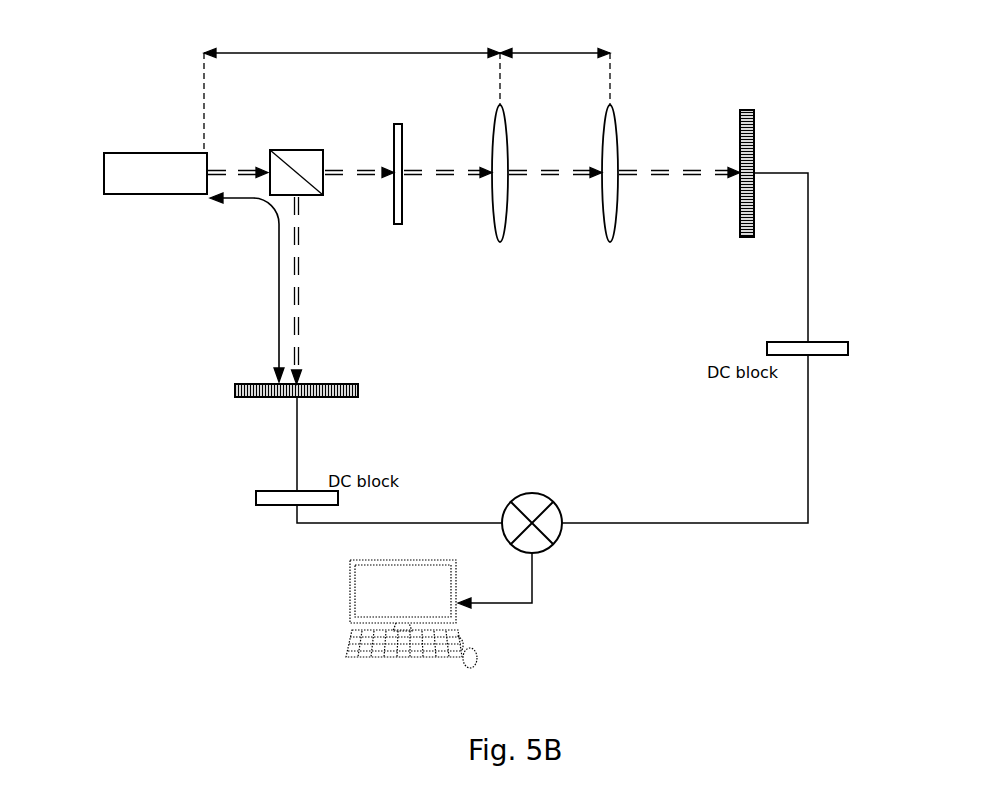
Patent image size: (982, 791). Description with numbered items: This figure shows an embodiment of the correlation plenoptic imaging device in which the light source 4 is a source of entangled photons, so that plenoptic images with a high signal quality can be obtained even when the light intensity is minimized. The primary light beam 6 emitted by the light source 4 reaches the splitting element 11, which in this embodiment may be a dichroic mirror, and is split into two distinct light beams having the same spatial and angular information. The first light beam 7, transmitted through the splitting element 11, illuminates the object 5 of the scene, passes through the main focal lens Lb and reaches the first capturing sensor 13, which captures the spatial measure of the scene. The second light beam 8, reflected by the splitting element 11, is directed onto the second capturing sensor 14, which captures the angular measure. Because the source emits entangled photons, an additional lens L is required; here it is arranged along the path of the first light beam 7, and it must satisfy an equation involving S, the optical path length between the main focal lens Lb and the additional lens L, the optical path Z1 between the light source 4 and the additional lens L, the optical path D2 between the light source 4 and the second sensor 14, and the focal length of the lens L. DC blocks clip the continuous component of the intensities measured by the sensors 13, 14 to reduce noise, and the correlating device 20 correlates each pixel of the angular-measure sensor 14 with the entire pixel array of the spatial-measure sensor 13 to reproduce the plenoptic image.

The light source 4 is at (140, 173).
The object 5 is at (399, 156).
The primary light beam 6 is at (238, 159).
The first light beam 7 is at (359, 158).
The second light beam 8 is at (307, 290).
The splitting element 11 is at (296, 154).
The first capturing sensor 13 is at (747, 158).
The second capturing sensor 14 is at (274, 391).
The correlating device 20 is at (532, 503).
The additional lens L is at (490, 173).
The main focal lens Lb is at (627, 173).
The optical path between the light source and the second sensor D2 is at (247, 287).
The optical path between the light source and the additional focal lens Z1 is at (352, 87).
The optical path between the main focal lens and the additional focal lens S is at (555, 65).